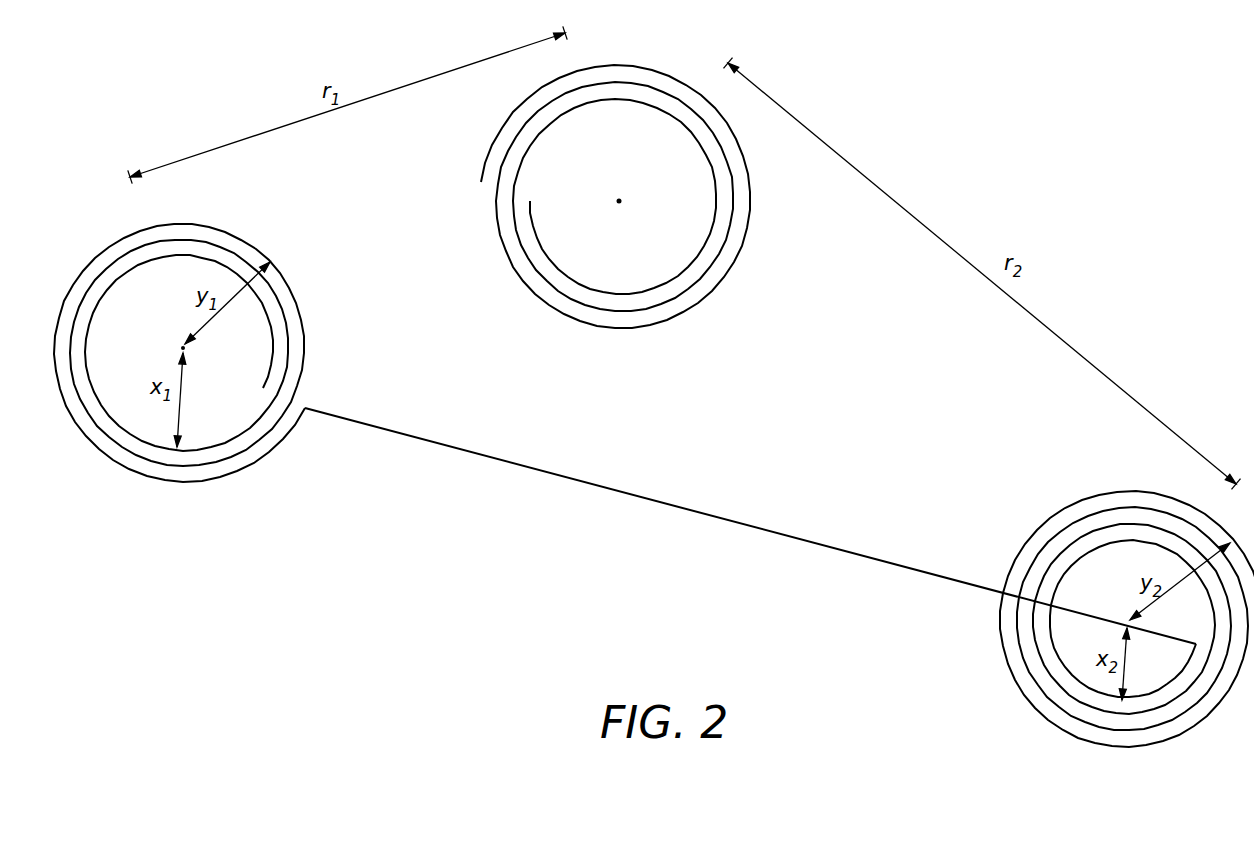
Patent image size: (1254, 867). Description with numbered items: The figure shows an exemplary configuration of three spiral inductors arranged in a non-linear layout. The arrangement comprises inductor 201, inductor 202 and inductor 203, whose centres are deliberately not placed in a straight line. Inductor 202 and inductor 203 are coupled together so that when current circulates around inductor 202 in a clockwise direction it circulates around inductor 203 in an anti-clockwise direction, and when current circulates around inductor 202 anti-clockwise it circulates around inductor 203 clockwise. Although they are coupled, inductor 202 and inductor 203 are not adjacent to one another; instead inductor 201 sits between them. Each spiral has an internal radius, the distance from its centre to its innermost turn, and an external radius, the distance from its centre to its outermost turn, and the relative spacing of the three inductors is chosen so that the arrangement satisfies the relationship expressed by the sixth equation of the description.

The inductor 201 is at (712, 300).
The inductor 202 is at (305, 330).
The inductor 203 is at (1072, 508).